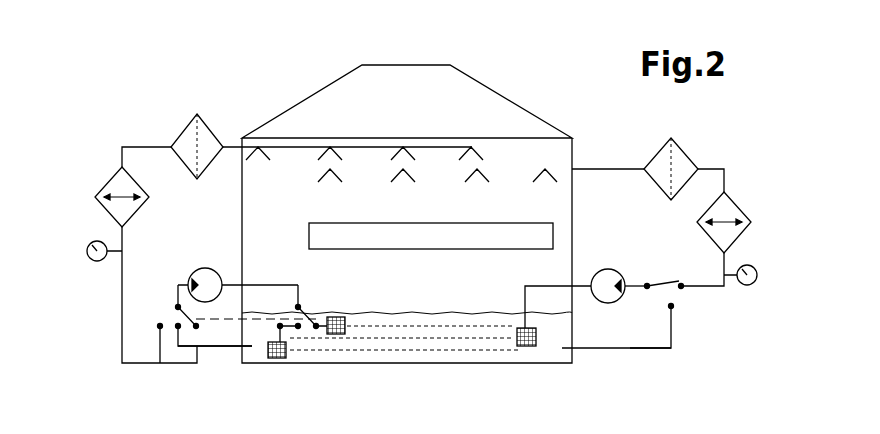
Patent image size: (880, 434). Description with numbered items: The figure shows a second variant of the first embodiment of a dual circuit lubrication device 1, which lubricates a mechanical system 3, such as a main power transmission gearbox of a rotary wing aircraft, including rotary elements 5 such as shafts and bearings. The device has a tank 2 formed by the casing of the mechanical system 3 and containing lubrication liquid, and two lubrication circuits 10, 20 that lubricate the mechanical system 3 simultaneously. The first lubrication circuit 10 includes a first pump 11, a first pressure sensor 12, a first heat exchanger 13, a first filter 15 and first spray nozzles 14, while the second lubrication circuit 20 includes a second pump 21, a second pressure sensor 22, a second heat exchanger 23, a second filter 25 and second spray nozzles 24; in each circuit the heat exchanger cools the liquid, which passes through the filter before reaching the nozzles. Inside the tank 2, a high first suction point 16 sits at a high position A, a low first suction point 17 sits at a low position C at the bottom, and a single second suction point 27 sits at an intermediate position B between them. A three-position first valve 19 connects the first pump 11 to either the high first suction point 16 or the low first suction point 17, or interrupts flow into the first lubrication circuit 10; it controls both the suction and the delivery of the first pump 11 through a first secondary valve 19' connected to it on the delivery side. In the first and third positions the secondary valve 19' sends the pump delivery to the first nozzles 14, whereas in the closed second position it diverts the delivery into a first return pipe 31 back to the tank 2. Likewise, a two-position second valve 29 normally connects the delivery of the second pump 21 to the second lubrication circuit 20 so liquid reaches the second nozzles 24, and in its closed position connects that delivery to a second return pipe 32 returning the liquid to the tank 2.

The dual circuit lubrication device 1 is at (375, 212).
The tank 2 is at (545, 363).
The mechanical system 3 is at (528, 98).
The rotary elements 5 is at (309, 243).
The first lubrication circuit 10 is at (90, 318).
The first pump 11 is at (205, 268).
The first pressure sensor 12 is at (88, 256).
The first heat exchanger 13 is at (114, 167).
The first spray nozzles 14 is at (318, 153).
The first filter 15 is at (192, 119).
The high first suction point 16 is at (345, 330).
The low first suction point 17 is at (276, 359).
The three-position first valve 19 is at (313, 299).
The first secondary valve 19' is at (228, 294).
The second lubrication circuit 20 is at (750, 347).
The second pump 21 is at (608, 269).
The second pressure sensor 22 is at (758, 269).
The second heat exchanger 23 is at (739, 203).
The second spray nozzles 24 is at (400, 182).
The second filter 25 is at (688, 151).
The second suction point 27 is at (522, 326).
The two-position second valve 29 is at (668, 281).
The first return pipe 31 is at (232, 347).
The second return pipe 32 is at (630, 350).
The high position A is at (465, 326).
The intermediate position B is at (472, 339).
The low position C is at (455, 352).